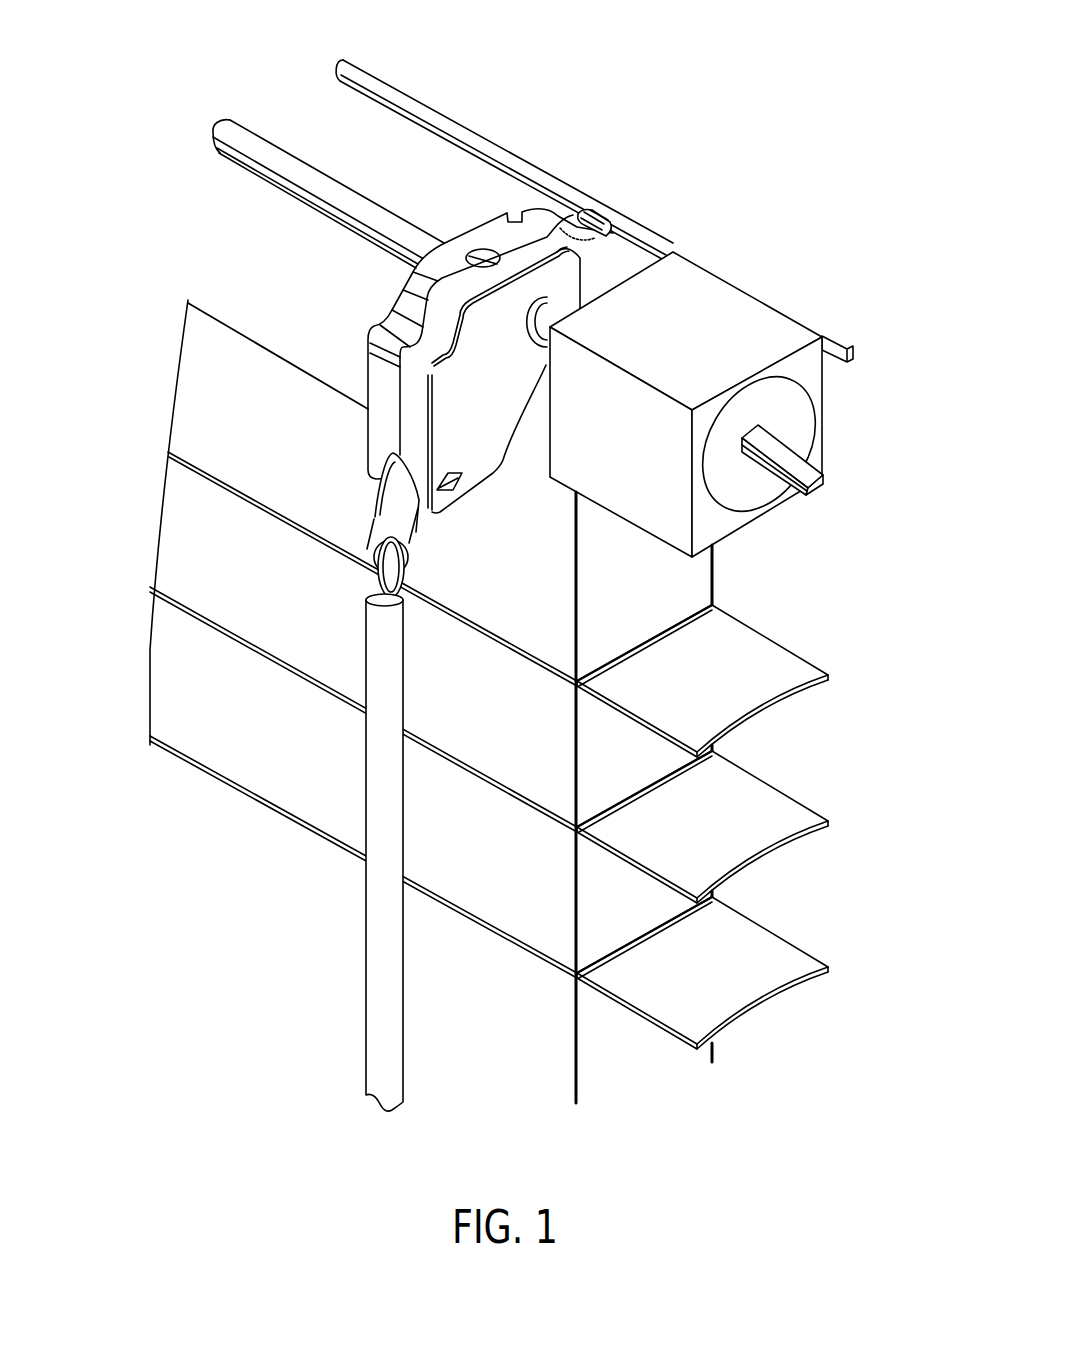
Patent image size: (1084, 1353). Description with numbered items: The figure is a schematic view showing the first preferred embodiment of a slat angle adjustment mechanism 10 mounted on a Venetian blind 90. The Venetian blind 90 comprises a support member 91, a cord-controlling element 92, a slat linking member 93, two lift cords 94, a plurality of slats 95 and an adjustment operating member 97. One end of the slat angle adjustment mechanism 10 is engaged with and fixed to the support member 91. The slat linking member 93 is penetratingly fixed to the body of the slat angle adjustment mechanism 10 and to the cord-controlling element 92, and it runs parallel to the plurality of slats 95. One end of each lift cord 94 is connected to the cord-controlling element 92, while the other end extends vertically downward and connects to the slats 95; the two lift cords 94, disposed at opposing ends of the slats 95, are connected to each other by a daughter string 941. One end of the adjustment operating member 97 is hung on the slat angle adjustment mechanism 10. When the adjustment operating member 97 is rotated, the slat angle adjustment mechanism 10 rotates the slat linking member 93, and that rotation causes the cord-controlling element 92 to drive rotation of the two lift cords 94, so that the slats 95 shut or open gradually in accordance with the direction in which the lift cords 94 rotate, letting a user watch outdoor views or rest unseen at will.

The Venetian blind 90 is at (150, 267).
The slat angle adjustment mechanism 10 is at (513, 214).
The support member 91 is at (667, 240).
The cord-controlling element 92 is at (768, 343).
The slat linking member 93 is at (800, 458).
The lift cord 94 is at (713, 570).
The daughter string 941 is at (663, 635).
The slat 95 is at (778, 812).
The adjustment operating member 97 is at (378, 968).